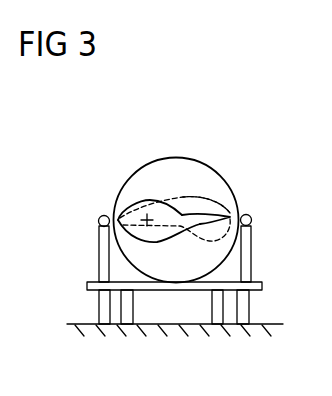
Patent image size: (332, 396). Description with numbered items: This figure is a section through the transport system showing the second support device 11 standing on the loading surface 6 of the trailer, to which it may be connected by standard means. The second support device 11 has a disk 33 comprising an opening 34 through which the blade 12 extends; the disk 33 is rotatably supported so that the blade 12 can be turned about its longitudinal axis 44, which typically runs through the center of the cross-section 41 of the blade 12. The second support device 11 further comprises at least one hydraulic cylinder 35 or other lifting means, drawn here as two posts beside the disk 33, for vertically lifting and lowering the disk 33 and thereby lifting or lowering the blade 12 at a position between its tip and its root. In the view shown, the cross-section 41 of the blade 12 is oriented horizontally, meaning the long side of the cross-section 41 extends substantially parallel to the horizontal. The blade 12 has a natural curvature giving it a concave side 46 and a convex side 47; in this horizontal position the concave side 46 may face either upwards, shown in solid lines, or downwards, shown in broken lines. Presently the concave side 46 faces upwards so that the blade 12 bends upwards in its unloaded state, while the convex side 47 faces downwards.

The loading surface 6 is at (87, 283).
The second support device 11 is at (88, 197).
The blade 12 is at (208, 186).
The disk 33 is at (218, 190).
The opening 34 is at (150, 203).
The hydraulic cylinder 35 is at (99, 237).
The cross-section 41 is at (147, 214).
The longitudinal axis 44 is at (165, 241).
The concave side 46 is at (175, 200).
The convex side 47 is at (215, 203).